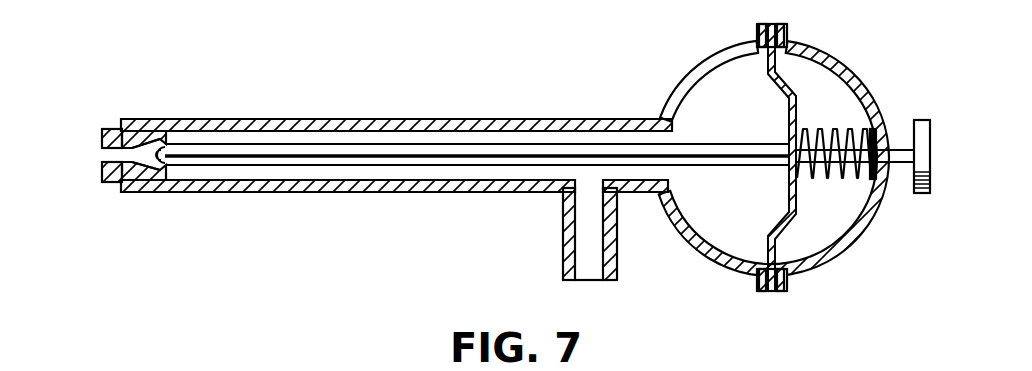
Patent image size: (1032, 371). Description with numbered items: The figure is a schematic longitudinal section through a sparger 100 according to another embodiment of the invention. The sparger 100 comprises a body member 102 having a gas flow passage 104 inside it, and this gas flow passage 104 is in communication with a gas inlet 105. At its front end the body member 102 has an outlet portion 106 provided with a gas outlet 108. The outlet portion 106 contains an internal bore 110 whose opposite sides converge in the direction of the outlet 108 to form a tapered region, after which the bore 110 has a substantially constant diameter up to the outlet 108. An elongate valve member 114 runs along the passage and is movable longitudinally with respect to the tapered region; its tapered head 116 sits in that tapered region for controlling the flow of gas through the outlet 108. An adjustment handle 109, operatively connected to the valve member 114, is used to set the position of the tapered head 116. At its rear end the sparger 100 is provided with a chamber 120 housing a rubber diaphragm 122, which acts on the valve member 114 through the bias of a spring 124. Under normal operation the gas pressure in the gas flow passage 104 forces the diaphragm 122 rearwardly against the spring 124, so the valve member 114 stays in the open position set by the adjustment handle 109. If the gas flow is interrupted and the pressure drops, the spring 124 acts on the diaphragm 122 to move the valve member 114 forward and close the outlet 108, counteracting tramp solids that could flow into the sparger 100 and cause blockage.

The sparger 100 is at (300, 110).
The body member 102 is at (372, 187).
The gas flow passage 104 is at (450, 167).
The gas inlet 105 is at (588, 282).
The outlet portion 106 is at (121, 106).
The gas outlet 108 is at (104, 155).
The adjustment handle 109 is at (917, 120).
The internal bore 110 is at (171, 169).
The valve member 114 is at (471, 153).
The tapered head 116 is at (168, 152).
The chamber 120 is at (701, 250).
The rubber diaphragm 122 is at (763, 70).
The spring 124 is at (828, 181).